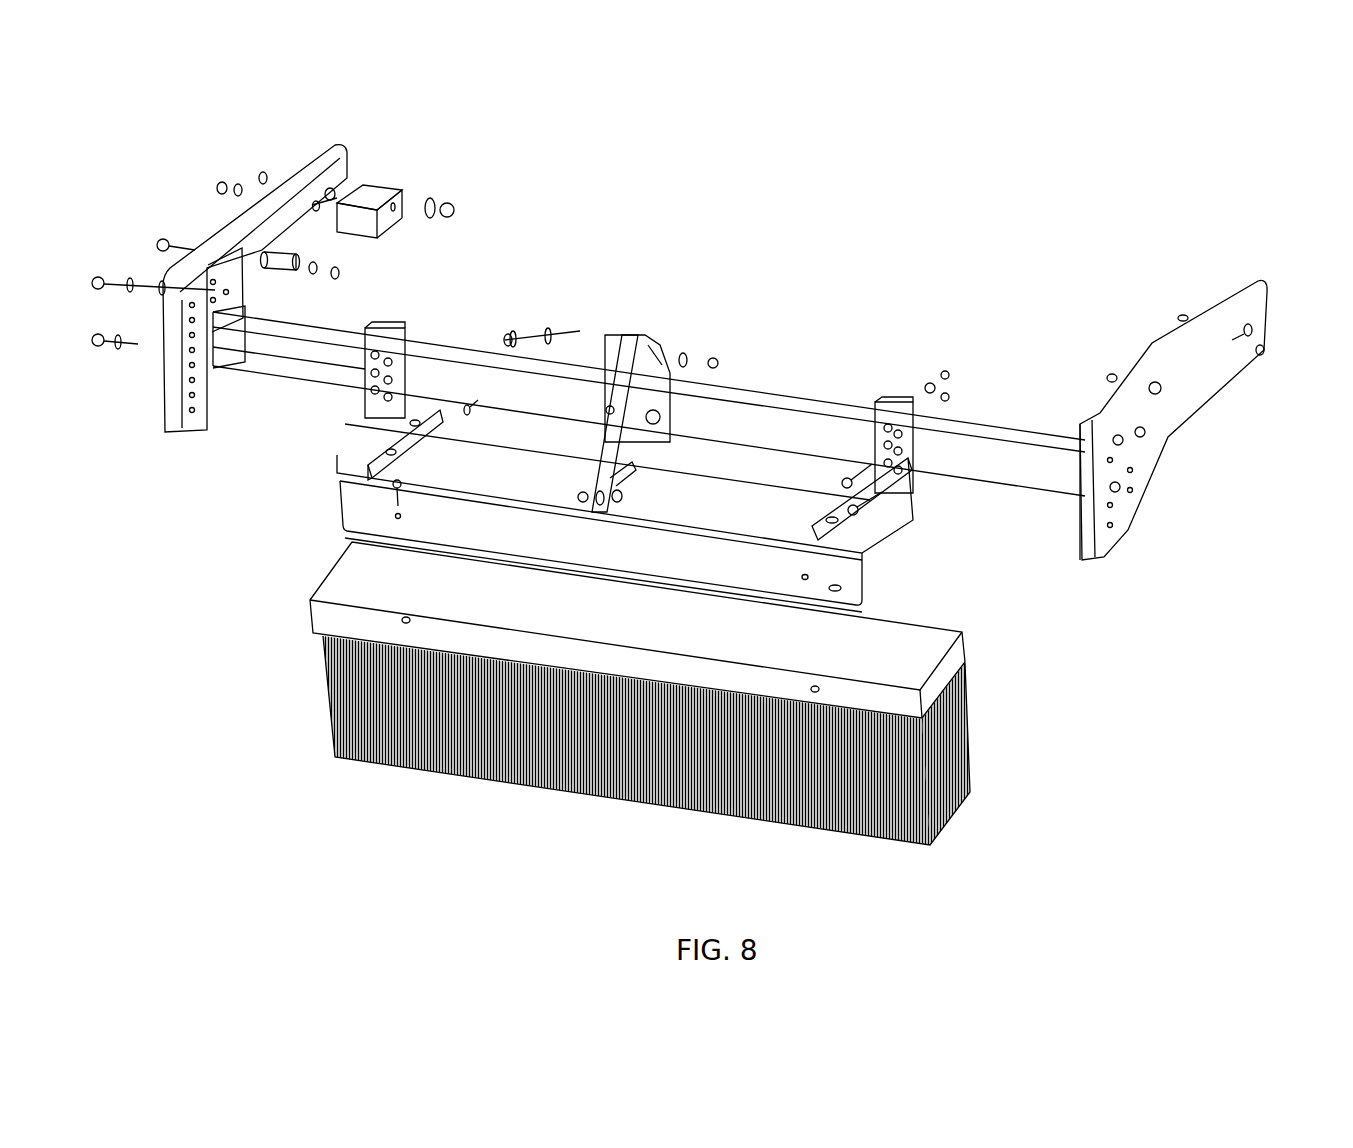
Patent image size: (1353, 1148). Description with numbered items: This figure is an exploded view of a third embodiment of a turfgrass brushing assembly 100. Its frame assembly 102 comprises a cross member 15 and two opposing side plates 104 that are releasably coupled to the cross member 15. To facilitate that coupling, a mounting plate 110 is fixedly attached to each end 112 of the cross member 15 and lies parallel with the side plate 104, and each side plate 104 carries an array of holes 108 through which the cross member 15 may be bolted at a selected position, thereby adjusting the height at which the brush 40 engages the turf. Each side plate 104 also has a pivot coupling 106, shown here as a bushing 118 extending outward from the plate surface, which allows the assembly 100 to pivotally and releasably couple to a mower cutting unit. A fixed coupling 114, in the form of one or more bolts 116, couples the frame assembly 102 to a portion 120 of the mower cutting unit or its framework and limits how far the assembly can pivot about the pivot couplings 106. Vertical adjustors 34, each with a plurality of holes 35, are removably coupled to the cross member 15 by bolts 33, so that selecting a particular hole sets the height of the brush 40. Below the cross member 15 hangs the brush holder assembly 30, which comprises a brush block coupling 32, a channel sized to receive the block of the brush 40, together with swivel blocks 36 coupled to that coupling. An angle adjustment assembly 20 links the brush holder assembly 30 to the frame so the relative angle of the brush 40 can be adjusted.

The turfgrass brushing assembly 100 is at (1222, 146).
The frame assembly 102 is at (170, 194).
The side plate 104 is at (299, 152).
The pivot coupling 106 is at (277, 263).
The array of holes 108 is at (193, 282).
The mounting plate 110 is at (215, 332).
The end of cross member 112 is at (237, 345).
The fixed coupling 114 is at (480, 213).
The bolt 116 is at (1183, 318).
The bushing 118 is at (278, 265).
The portion of the mower cutting unit 120 is at (363, 187).
The cross member 15 is at (347, 342).
The angle adjustment assembly 20 is at (642, 318).
The brush holder assembly 30 is at (992, 632).
The brush block coupling 32 is at (413, 527).
The bolt 33 is at (380, 392).
The vertical adjustor 34 is at (400, 366).
The plurality of holes 35 is at (898, 445).
The swivel block 36 is at (378, 468).
The brush 40 is at (297, 692).